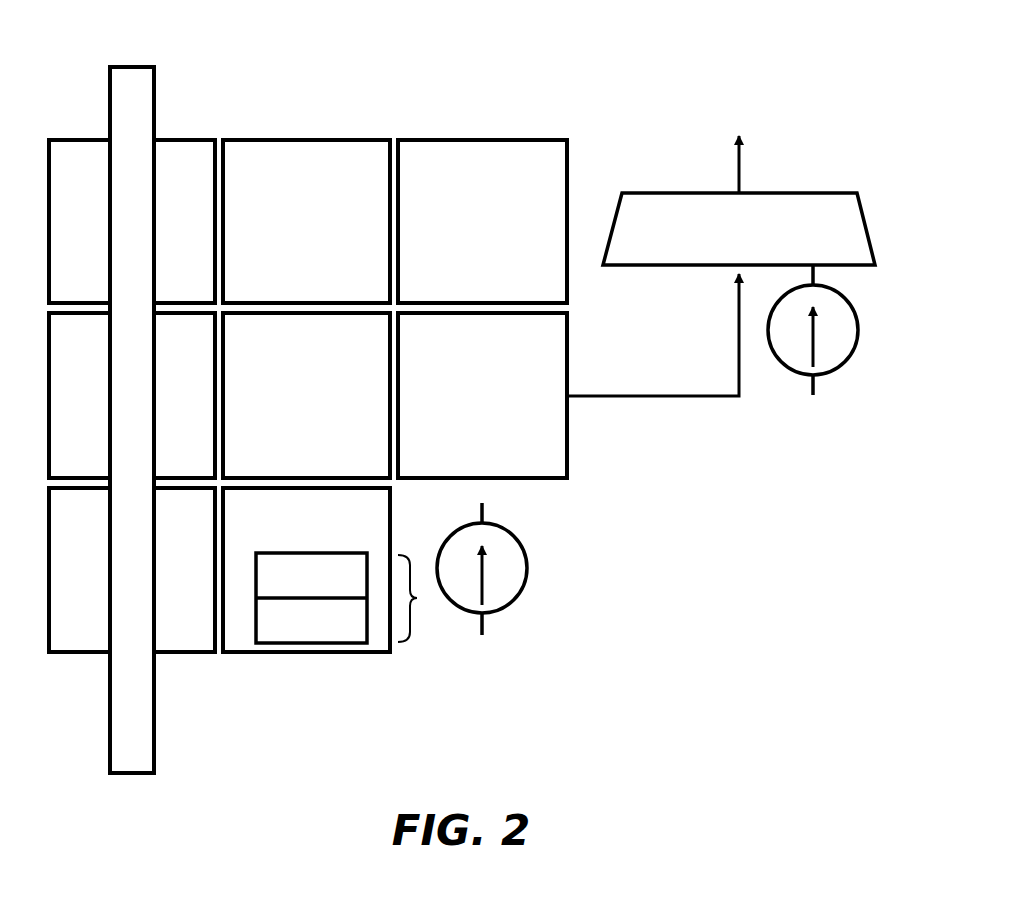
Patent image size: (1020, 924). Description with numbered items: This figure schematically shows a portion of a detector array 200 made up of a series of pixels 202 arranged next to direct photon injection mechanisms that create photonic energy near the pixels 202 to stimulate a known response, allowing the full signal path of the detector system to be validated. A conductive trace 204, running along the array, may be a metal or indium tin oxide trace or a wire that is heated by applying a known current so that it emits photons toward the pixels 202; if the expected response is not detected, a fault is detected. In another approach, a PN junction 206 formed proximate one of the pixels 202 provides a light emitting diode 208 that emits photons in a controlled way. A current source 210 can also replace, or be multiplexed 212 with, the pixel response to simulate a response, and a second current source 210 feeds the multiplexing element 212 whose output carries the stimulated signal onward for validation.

The detector array 200 is at (692, 46).
The pixels 202 is at (287, 234).
The conductive trace 204 is at (154, 100).
The PN junction 206 is at (417, 598).
The light emitting diode 208 is at (291, 591).
The current source 210 is at (527, 568).
The multiplexer 212 is at (718, 240).